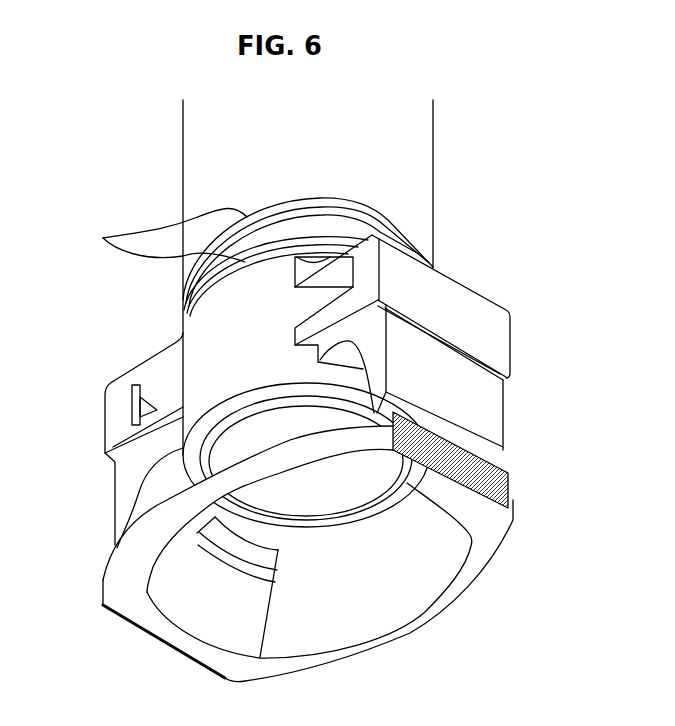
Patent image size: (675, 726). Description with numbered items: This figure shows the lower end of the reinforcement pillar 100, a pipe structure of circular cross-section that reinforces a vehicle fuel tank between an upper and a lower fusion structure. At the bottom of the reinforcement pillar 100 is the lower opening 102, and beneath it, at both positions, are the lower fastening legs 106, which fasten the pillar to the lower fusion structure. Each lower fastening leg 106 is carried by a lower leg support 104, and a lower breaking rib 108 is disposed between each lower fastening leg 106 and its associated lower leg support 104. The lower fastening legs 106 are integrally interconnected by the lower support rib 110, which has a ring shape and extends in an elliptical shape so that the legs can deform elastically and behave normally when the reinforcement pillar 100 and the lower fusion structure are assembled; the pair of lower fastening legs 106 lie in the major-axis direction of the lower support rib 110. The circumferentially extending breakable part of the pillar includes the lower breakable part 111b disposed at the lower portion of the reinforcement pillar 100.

The reinforcement pillar 100 is at (441, 155).
The lower opening 102 is at (210, 418).
The lower leg support 104 is at (477, 395).
The lower fastening leg 106 is at (172, 598).
The lower breaking rib 108 is at (397, 408).
The lower support rib 110 is at (485, 547).
The lower breakable part 111b is at (143, 235).